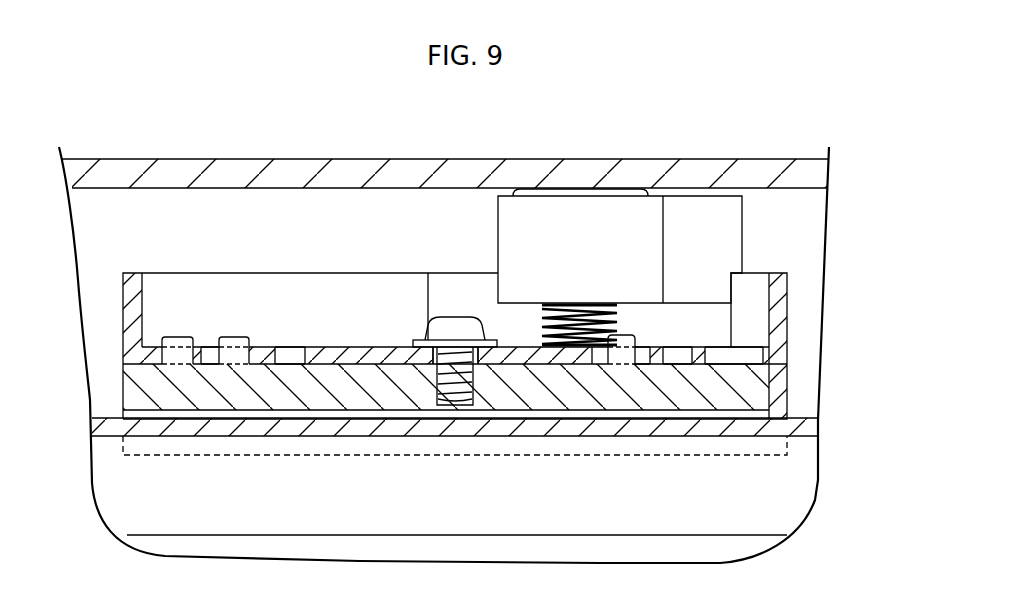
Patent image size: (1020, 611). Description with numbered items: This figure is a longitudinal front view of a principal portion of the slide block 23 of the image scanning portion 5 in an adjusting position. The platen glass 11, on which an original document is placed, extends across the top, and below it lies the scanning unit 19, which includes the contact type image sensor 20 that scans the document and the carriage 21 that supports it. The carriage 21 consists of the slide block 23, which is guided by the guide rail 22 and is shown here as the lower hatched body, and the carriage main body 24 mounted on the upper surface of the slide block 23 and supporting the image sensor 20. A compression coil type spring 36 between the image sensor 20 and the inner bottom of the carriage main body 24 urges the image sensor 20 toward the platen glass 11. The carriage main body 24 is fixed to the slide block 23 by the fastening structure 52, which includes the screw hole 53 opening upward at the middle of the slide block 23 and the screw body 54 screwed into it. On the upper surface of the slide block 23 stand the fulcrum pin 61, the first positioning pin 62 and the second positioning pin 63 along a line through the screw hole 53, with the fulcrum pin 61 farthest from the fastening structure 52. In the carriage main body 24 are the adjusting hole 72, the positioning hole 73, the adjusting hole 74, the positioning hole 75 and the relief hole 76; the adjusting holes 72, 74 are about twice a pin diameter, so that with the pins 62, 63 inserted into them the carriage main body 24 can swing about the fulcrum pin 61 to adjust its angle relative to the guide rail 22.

The image scanning portion 5 is at (199, 145).
The platen glass 11 is at (348, 175).
The scanning unit 19 is at (790, 236).
The contact type image sensor (CIS) 20 is at (582, 210).
The carriage 21 is at (855, 333).
The guide rail 22 is at (816, 425).
The slide block 23 is at (787, 394).
The carriage main body 24 is at (787, 330).
The compression coil type spring 36 is at (566, 310).
The fastening structure 52 is at (490, 238).
The screw hole 53 is at (442, 373).
The screw body 54 is at (465, 315).
The fulcrum pin 61 is at (182, 342).
The first positioning pin 62 is at (232, 343).
The second positioning pin 63 is at (628, 335).
The adjusting hole 72 is at (213, 355).
The positioning hole 73 is at (288, 353).
The adjusting hole 74 is at (643, 355).
The positioning hole 75 is at (676, 356).
The relief hole 76 is at (722, 357).